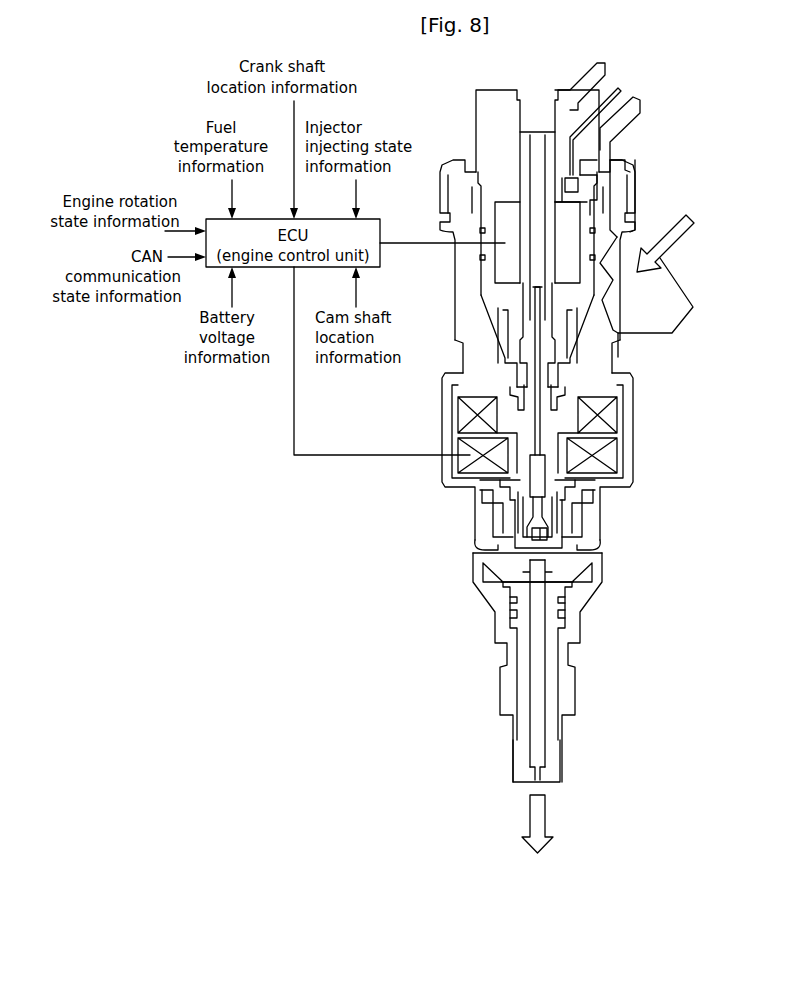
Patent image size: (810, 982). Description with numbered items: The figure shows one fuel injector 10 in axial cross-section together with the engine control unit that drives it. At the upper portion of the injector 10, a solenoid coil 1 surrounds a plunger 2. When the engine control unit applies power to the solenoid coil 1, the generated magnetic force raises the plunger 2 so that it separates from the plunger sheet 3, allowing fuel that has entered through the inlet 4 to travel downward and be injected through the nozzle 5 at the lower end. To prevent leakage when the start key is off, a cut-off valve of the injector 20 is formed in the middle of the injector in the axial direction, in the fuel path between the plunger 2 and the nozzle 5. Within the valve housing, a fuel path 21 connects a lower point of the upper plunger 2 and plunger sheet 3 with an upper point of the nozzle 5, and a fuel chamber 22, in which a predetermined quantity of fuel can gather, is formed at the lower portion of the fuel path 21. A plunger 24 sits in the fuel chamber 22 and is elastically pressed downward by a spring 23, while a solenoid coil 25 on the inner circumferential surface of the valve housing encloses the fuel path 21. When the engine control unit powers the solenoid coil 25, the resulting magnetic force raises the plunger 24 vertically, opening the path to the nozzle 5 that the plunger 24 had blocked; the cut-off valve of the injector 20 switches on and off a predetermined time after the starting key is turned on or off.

The injector 10 is at (645, 143).
The solenoid coil 1 is at (573, 223).
The plunger 2 is at (537, 313).
The plunger sheet 3 is at (515, 397).
The inlet 4 is at (660, 262).
The nozzle 5 is at (540, 773).
The cut-off valve of the injector 20 is at (637, 415).
The fuel path 21 is at (543, 450).
The fuel chamber 22 is at (558, 527).
The spring 23 is at (537, 487).
The plunger of the cut-off valve 24 is at (520, 532).
The solenoid coil 25 is at (470, 450).